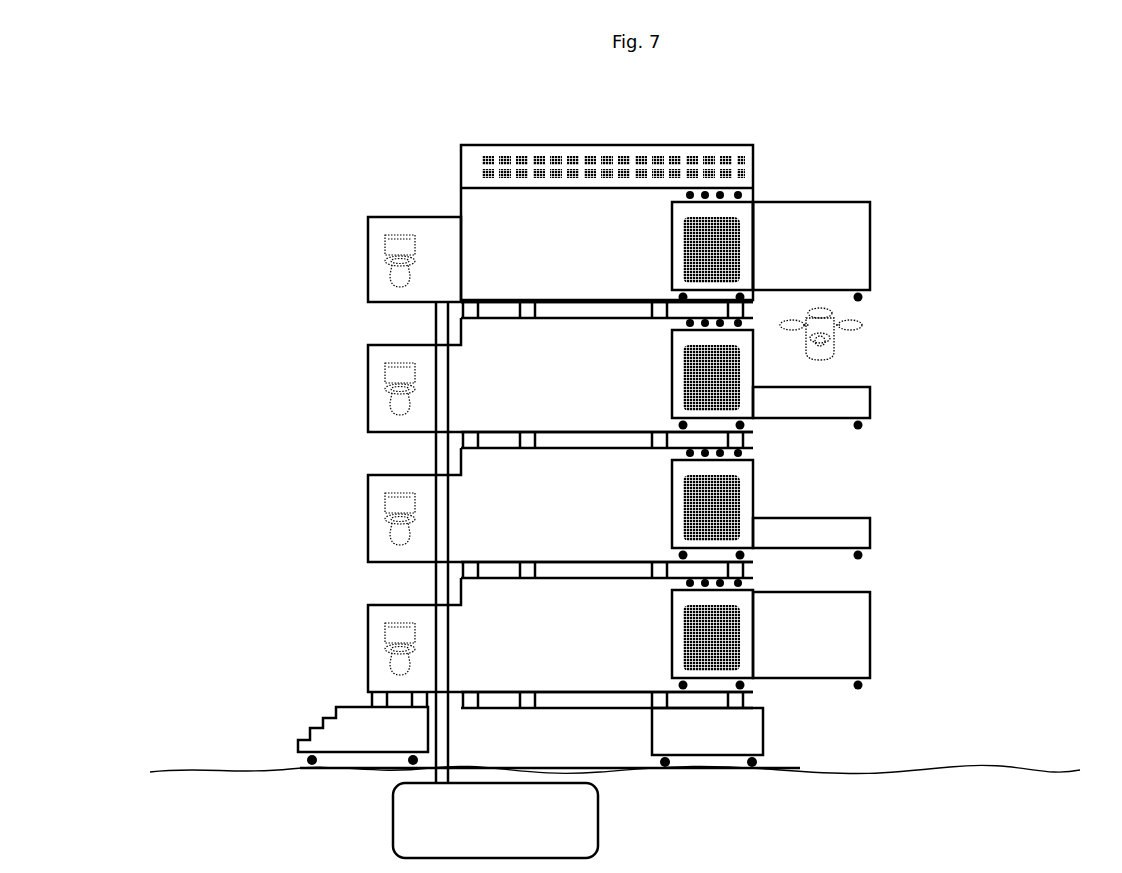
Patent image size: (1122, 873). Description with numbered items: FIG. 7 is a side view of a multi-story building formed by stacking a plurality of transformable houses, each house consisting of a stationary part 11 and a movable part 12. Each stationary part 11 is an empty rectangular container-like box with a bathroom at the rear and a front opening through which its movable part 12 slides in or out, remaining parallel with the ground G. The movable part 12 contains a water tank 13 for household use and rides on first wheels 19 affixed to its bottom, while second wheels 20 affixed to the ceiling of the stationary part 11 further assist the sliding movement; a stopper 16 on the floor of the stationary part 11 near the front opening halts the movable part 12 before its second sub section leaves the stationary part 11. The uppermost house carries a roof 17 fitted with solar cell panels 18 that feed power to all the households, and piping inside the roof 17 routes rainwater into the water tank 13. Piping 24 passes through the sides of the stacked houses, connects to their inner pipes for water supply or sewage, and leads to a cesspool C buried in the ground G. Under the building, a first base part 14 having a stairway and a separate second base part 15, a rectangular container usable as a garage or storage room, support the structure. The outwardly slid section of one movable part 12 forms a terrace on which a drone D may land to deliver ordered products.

The stationary part 11 is at (368, 236).
The movable part 12 is at (857, 258).
The water tank 13 is at (723, 248).
The first base part 14 is at (368, 737).
The second base part 15 is at (738, 742).
The stopper 16 is at (745, 302).
The roof 17 is at (460, 153).
The solar cell panels 18 is at (730, 150).
The first wheels 19 is at (862, 298).
The second wheels 20 is at (745, 197).
The piping 24 is at (440, 322).
The cesspool C is at (585, 808).
The drone D is at (845, 342).
The ground G is at (932, 768).